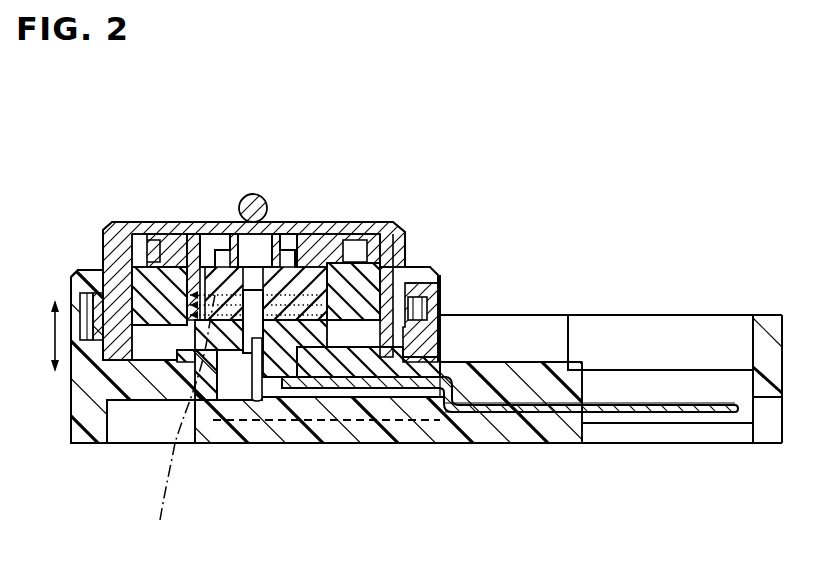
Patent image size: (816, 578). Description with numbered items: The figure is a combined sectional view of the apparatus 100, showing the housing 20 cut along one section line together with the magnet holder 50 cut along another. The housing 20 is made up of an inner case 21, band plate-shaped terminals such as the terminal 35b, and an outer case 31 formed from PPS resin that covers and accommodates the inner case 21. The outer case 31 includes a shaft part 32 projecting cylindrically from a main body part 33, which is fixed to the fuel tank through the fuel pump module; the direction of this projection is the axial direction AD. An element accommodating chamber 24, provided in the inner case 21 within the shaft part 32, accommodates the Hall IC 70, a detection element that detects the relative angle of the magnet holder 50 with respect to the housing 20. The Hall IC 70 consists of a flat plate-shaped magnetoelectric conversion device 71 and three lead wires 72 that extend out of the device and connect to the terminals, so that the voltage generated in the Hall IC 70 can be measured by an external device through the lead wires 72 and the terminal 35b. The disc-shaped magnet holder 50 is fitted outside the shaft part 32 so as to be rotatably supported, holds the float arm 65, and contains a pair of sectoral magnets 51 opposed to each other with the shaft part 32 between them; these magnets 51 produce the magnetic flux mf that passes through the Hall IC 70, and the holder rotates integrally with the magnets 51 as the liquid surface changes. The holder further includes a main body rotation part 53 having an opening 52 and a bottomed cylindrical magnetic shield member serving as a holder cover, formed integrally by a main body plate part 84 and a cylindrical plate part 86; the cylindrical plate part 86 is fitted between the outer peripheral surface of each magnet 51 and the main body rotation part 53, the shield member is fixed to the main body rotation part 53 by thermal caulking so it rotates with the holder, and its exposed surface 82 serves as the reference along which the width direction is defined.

The motor assembly 100 is at (744, 265).
The housing 20 is at (770, 315).
The inner case 21 is at (447, 377).
The element accommodating chamber 24 is at (262, 395).
The outer case 31 is at (560, 315).
The shaft part 32 is at (195, 280).
The main body part 33 is at (120, 443).
The terminal 35b is at (370, 388).
The magnet holder 50 is at (103, 242).
The magnet 51 is at (135, 290).
The opening 52 is at (377, 222).
The main body rotation part 53 is at (408, 240).
The float arm 65 is at (253, 194).
The Hall IC 70 is at (250, 355).
The magnetoelectric conversion device 71 is at (250, 392).
The lead wire 72 is at (290, 398).
The exposed surface 82 is at (150, 250).
The main body plate part 84 is at (305, 232).
The cylindrical plate part 86 is at (100, 295).
The magnetic flux mf is at (180, 421).
The axial direction AD is at (55, 332).